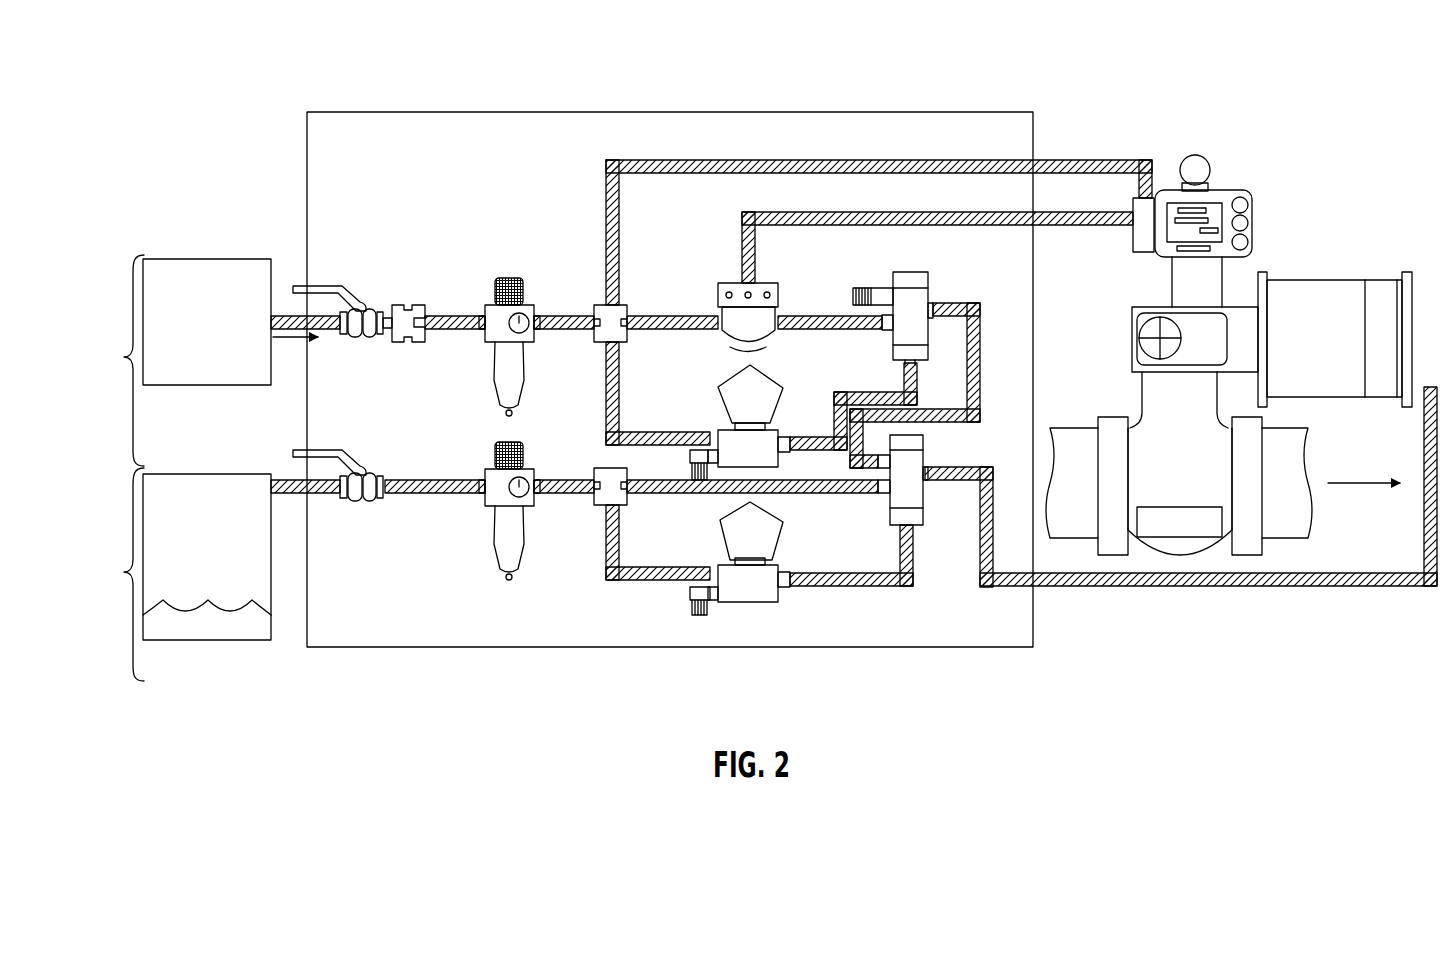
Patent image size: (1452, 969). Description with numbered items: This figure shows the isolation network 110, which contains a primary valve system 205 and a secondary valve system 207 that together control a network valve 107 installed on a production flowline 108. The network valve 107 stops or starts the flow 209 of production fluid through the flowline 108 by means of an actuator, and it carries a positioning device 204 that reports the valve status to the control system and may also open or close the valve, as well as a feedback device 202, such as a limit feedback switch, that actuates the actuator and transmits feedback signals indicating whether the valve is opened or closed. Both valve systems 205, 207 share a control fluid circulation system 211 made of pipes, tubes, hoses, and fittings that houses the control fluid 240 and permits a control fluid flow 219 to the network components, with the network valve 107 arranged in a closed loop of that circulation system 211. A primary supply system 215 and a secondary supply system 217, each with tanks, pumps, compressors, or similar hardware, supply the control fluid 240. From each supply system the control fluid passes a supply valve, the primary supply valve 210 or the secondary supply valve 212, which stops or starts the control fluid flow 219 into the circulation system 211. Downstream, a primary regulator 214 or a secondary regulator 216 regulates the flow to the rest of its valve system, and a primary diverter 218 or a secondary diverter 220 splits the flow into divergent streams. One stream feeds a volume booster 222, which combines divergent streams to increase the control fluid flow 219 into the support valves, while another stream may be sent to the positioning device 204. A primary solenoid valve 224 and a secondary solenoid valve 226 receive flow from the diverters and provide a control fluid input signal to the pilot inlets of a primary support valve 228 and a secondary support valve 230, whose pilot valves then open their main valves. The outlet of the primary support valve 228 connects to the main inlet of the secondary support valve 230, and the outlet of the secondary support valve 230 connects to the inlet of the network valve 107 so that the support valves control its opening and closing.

The isolation network 110 is at (967, 56).
The positioning device 204 is at (1196, 150).
The feedback device 202 is at (1128, 354).
The network valve 107 is at (1180, 560).
The production flowline 108 is at (1284, 542).
The flow 209 is at (1378, 483).
The control fluid circulation system 211 is at (1102, 590).
The primary valve system 205 is at (168, 360).
The secondary valve system 207 is at (168, 583).
The primary supply system 215 is at (207, 322).
The secondary supply system 217 is at (228, 591).
The control fluid 240 is at (221, 626).
The control fluid flow 219 is at (284, 337).
The primary supply valve 210 is at (316, 282).
The secondary supply valve 212 is at (305, 447).
The primary regulator 214 is at (494, 307).
The secondary regulator 216 is at (494, 508).
The primary diverter 218 is at (599, 347).
The secondary diverter 220 is at (599, 508).
The volume booster 222 is at (725, 282).
The primary solenoid valve 224 is at (716, 383).
The secondary solenoid valve 226 is at (716, 538).
The primary support valve 228 is at (892, 284).
The secondary support valve 230 is at (918, 528).